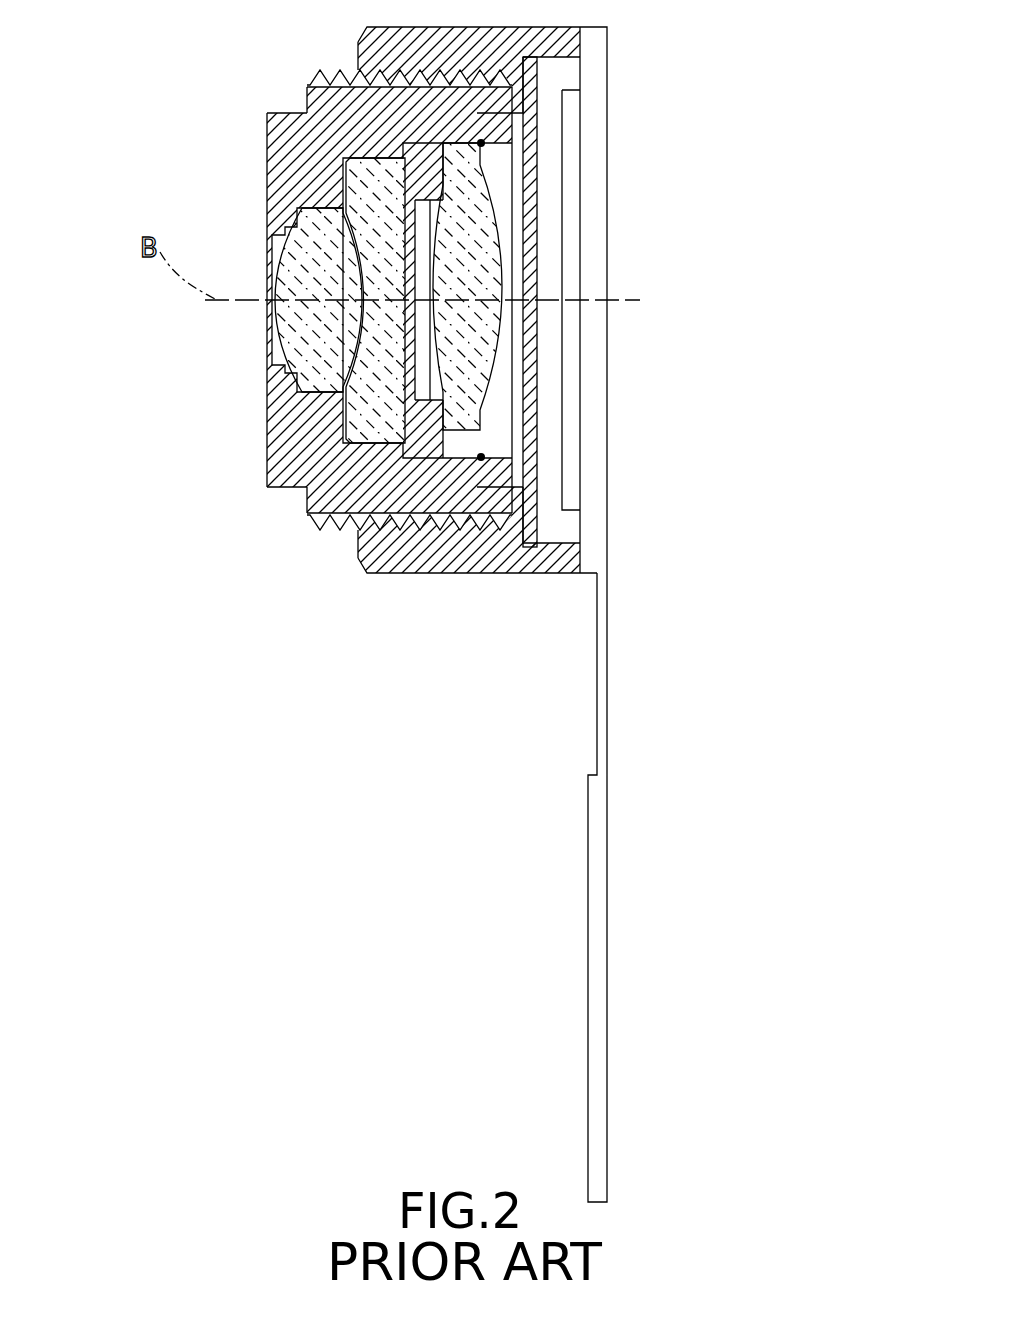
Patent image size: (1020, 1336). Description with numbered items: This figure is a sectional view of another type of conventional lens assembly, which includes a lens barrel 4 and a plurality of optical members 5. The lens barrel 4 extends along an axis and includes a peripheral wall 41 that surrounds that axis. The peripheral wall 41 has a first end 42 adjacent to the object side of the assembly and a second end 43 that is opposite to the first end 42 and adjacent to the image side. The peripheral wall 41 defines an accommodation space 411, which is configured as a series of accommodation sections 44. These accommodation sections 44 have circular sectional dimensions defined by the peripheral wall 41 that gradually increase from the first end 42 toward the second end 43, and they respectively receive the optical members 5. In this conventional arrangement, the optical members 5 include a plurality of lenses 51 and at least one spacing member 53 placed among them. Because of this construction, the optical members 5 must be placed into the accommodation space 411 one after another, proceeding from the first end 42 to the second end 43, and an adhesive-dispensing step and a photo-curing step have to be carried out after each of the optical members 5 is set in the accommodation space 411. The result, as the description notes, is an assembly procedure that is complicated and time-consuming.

The lens barrel 4 is at (283, 108).
The peripheral wall 41 is at (327, 112).
The accommodation space 411 is at (330, 213).
The first end 42 is at (268, 160).
The second end 43 is at (608, 78).
The accommodation sections 44 is at (300, 408).
The optical members 5 is at (445, 399).
The lenses 51 is at (297, 340).
The spacing member 53 is at (430, 432).